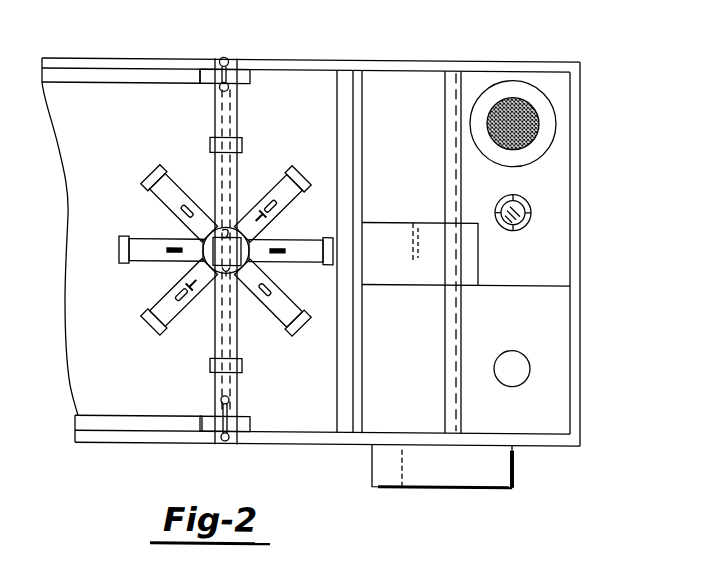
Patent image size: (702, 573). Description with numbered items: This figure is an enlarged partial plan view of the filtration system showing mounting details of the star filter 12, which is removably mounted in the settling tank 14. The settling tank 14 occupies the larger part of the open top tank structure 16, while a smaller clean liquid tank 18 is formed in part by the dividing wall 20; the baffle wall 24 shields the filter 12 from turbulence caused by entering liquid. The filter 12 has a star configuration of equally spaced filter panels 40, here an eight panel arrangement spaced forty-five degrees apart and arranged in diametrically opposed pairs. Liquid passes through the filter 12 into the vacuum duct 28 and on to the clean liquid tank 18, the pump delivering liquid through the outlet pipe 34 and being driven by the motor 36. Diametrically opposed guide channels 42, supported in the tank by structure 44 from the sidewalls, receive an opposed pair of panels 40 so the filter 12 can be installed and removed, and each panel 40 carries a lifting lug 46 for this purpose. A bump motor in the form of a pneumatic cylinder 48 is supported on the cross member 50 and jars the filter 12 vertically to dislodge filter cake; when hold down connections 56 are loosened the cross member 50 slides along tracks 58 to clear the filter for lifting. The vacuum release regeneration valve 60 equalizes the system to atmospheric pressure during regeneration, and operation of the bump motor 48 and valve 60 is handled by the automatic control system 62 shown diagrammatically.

The filter 12 is at (175, 169).
The settling tank 14 is at (309, 73).
The tank structure 16 is at (128, 55).
The clean liquid tank 18 is at (550, 264).
The dividing wall 20 is at (462, 307).
The baffle wall 24 is at (362, 364).
The vacuum duct 28 is at (370, 220).
The outlet pipe 34 is at (532, 203).
The motor 36 is at (556, 118).
The filter panels 40 is at (147, 264).
The guide channels 42 is at (242, 361).
The structure 44 is at (238, 106).
The lifting lug 46 is at (263, 210).
The pneumatic cylinder 48 is at (241, 210).
The cross member 50 is at (160, 440).
The hold down connections 56 is at (227, 439).
The tracks 58 is at (100, 85).
The vacuum release regeneration valve 60 is at (530, 373).
The automatic control system 62 is at (512, 458).